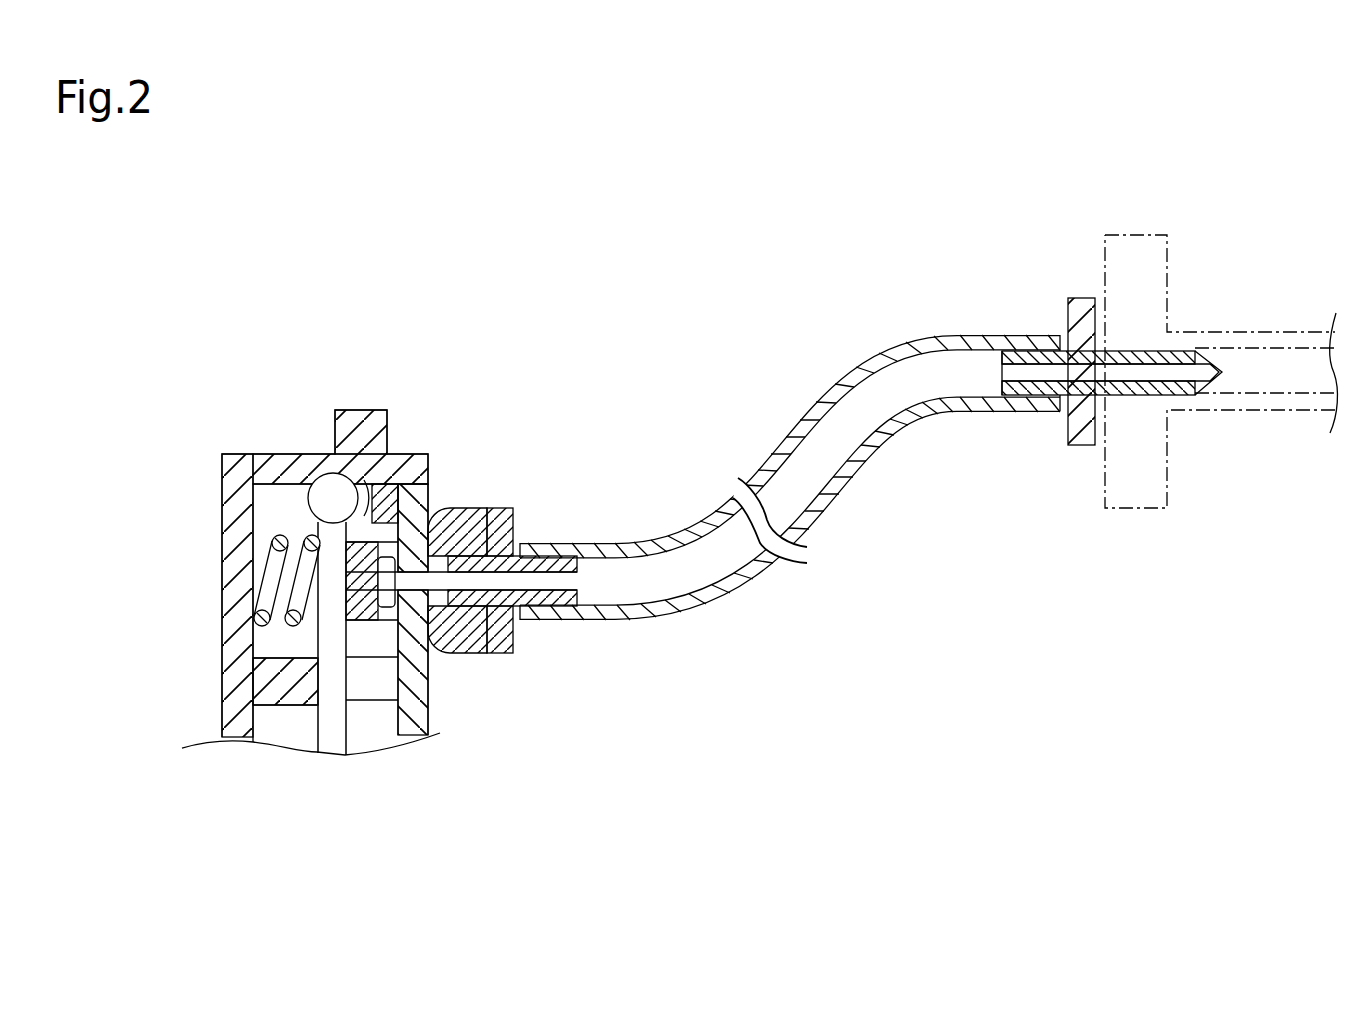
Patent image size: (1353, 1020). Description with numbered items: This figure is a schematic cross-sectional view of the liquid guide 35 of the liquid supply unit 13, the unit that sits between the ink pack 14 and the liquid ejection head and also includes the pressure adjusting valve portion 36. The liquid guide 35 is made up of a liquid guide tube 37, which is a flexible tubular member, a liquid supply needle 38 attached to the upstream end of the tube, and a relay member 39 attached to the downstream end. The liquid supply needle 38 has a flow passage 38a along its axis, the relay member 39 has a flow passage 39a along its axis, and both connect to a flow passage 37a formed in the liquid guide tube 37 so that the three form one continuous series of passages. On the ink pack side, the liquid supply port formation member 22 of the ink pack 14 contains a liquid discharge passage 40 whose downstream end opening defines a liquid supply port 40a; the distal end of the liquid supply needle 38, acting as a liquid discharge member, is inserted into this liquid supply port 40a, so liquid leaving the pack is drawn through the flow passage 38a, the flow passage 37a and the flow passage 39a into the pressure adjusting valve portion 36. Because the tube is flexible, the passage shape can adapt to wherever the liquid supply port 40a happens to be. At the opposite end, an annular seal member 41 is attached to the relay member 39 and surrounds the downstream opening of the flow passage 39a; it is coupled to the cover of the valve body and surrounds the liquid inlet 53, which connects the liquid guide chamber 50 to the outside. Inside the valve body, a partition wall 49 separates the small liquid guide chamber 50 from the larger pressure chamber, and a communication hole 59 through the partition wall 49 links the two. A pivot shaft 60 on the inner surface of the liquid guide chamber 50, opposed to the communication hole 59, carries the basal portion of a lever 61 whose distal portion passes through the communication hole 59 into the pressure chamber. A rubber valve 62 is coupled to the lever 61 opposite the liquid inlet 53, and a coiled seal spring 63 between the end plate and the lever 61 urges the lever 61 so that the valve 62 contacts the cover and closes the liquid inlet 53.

The liquid supply unit 13 is at (597, 283).
The ink pack 14 is at (1185, 183).
The liquid supply port formation member 22 is at (1105, 485).
The liquid guide 35 is at (655, 320).
The pressure adjusting valve portion 36 is at (472, 347).
The liquid guide tube 37 is at (826, 389).
The flow passage 37a is at (935, 355).
The liquid supply needle 38 is at (1165, 346).
The flow passage 38a is at (1068, 367).
The relay member 39 is at (505, 508).
The flow passage 39a is at (540, 583).
The liquid discharge passage 40 is at (1257, 371).
The liquid supply port 40a is at (1137, 388).
The annular seal member 41 is at (470, 508).
The partition wall 49 is at (400, 703).
The liquid guide chamber 50 is at (276, 509).
The liquid inlet 53 is at (433, 628).
The communication hole 59 is at (357, 703).
The pivot shaft 60 is at (325, 481).
The lever 61 is at (317, 682).
The valve 62 is at (432, 587).
The seal spring 63 is at (270, 608).